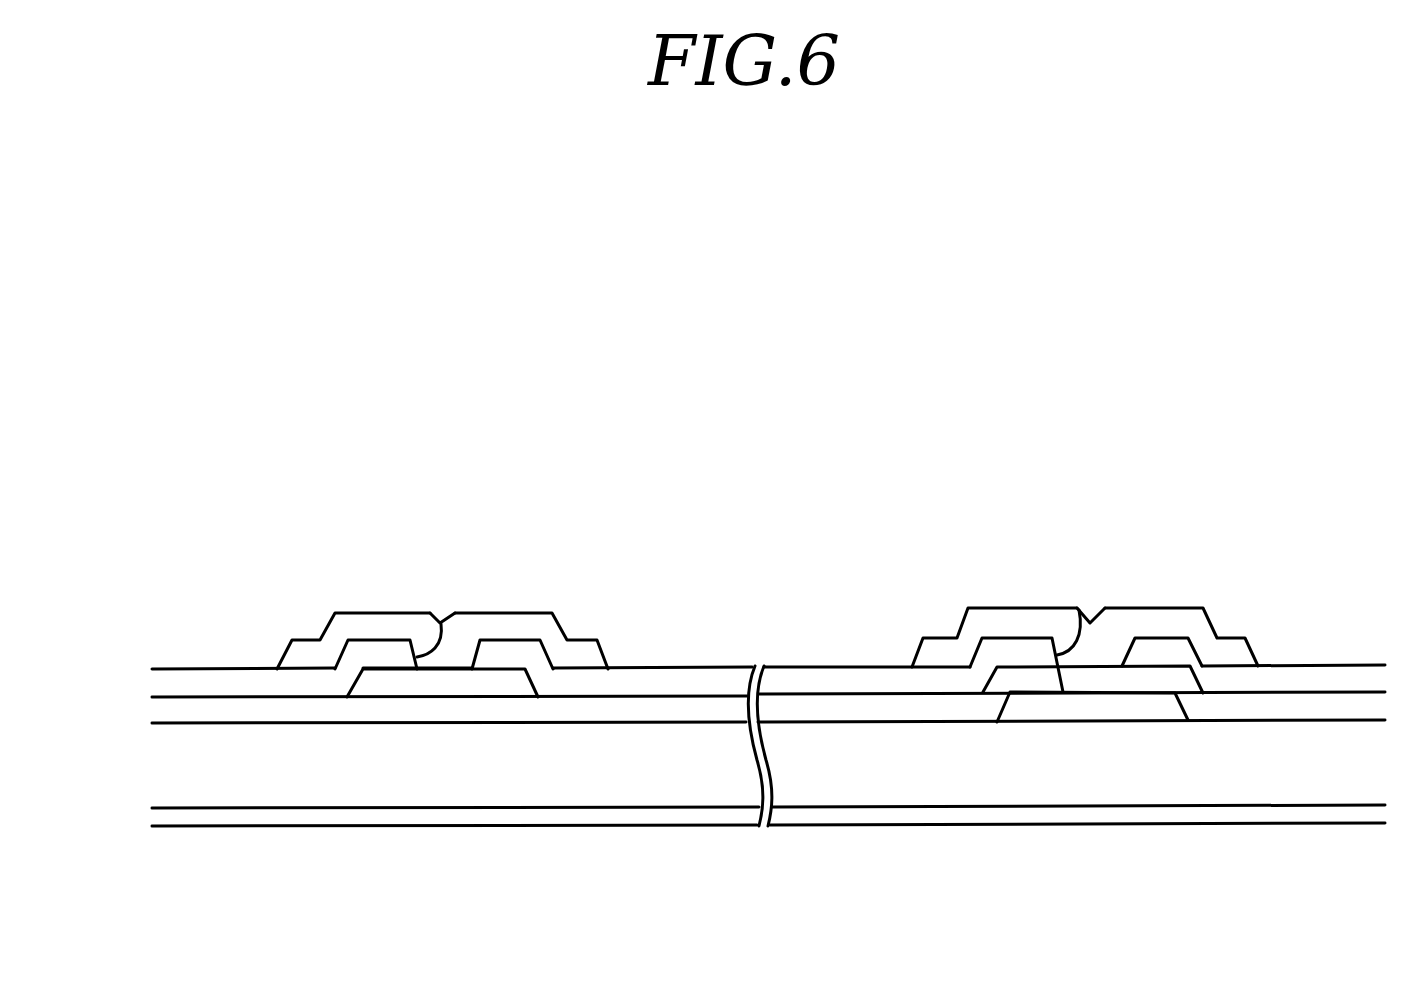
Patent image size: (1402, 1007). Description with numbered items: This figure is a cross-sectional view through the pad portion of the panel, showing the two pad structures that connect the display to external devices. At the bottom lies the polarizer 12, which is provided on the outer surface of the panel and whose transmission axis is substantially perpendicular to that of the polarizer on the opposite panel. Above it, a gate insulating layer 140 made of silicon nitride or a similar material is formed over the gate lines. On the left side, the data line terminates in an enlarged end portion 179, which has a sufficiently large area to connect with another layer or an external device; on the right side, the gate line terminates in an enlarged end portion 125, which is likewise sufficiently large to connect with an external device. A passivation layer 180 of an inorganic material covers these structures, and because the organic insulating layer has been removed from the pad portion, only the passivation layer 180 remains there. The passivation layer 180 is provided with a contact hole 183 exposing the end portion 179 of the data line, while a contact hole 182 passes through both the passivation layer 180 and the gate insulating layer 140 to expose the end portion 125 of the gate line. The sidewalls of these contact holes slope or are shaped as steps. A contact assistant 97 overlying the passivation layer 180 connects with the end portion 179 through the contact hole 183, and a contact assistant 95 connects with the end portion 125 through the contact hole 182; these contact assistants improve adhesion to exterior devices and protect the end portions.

The polarizer 12 is at (322, 818).
The contact assistant 95 is at (1192, 613).
The contact assistant 97 is at (363, 620).
The end portion of gate line 125 is at (1085, 710).
The gate insulating layer 140 is at (205, 710).
The end portion of data line 179 is at (422, 685).
The passivation layer 180 is at (578, 685).
The contact hole 182 is at (1078, 607).
The contact hole 183 is at (437, 613).